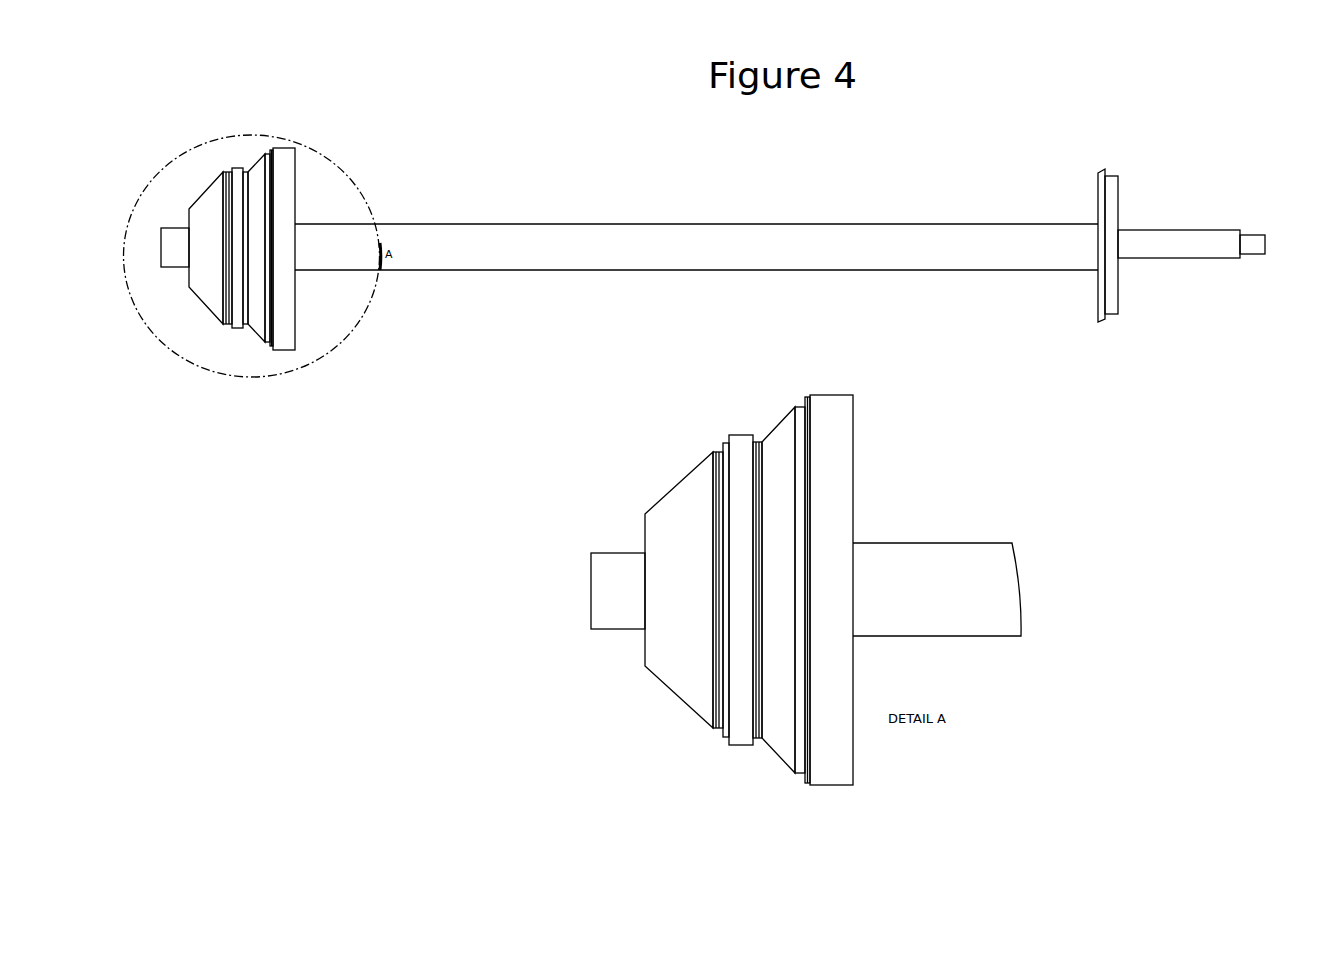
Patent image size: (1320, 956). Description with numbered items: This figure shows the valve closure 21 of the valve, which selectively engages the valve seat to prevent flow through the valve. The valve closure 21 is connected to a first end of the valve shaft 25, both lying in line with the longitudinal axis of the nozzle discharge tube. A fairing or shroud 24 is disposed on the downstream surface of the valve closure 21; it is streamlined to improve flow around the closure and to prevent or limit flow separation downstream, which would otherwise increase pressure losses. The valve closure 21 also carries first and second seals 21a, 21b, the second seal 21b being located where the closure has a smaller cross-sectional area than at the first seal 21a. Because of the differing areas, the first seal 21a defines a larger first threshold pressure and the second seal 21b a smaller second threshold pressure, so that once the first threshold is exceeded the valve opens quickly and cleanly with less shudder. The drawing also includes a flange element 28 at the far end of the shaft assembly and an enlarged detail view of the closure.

The valve closure 21 is at (283, 320).
The first seal 21a is at (265, 150).
The second seal 21b is at (240, 313).
The fairing or shroud 24 is at (208, 270).
The valve shaft 25 is at (935, 597).
The end flange 28 is at (1113, 218).